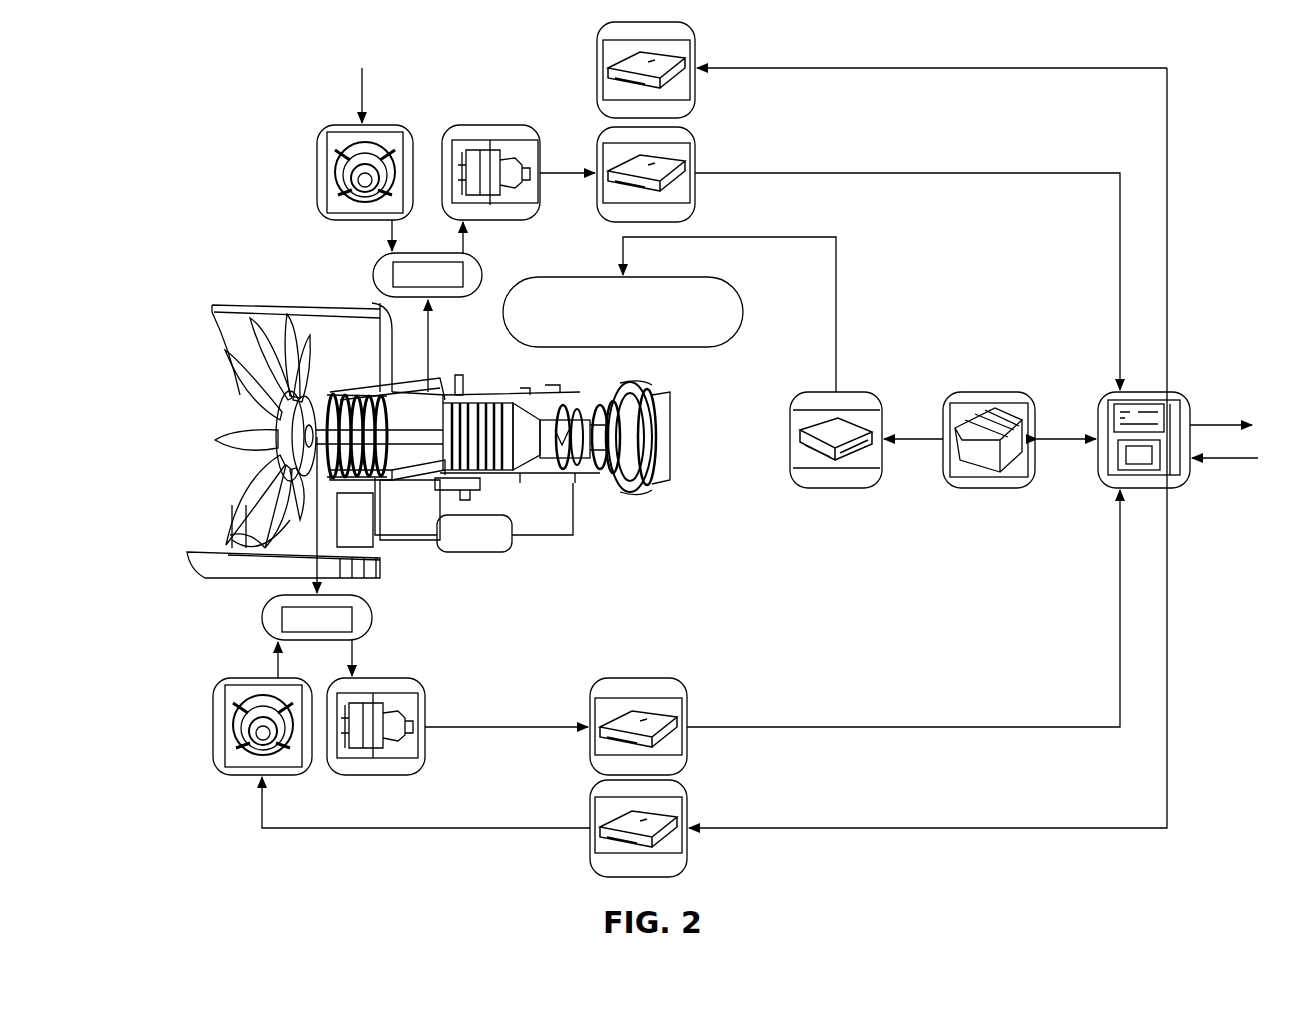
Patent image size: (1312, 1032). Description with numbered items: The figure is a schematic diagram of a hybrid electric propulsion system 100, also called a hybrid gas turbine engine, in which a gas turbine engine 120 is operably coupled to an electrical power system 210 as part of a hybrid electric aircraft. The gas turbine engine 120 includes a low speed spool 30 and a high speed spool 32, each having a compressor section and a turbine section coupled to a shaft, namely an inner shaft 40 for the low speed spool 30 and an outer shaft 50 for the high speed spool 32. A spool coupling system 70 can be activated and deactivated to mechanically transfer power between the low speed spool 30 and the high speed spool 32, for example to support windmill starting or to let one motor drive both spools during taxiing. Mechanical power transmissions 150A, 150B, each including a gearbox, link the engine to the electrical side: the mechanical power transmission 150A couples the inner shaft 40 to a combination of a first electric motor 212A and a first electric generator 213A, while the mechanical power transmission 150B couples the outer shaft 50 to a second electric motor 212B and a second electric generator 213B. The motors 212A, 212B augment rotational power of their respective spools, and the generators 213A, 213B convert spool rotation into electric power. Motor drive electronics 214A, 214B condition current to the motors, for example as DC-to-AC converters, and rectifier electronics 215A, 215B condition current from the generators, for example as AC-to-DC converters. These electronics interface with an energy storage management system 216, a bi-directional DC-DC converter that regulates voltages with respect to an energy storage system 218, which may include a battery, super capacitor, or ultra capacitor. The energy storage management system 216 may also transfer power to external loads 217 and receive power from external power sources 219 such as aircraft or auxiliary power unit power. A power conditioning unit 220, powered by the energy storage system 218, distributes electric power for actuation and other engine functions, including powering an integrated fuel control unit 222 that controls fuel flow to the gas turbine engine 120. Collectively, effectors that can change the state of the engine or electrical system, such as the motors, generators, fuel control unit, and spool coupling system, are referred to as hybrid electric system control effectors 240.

The hybrid electric propulsion system 100 is at (132, 97).
The gas turbine engine 120 is at (173, 353).
The inner shaft 40 is at (237, 398).
The low speed spool 30 is at (380, 390).
The outer shaft 50 is at (466, 392).
The high speed spool 32 is at (542, 430).
The spool coupling system 70 is at (487, 554).
The mechanical power transmission 150A is at (260, 618).
The mechanical power transmission 150B is at (482, 276).
The electrical power system 210 is at (138, 615).
The first electric motor 212A is at (265, 676).
The second electric motor 212B is at (352, 122).
The first electric generator 213A is at (378, 678).
The second electric generator 213B is at (468, 122).
The motor drive electronics 214A is at (695, 803).
The motor drive electronics 214B is at (695, 45).
The rectifier electronics 215A is at (640, 678).
The rectifier electronics 215B is at (695, 158).
The energy storage management system 216 is at (1190, 415).
The external loads 217 is at (1228, 418).
The energy storage system 218 is at (988, 392).
The external power sources 219 is at (1228, 460).
The power conditioning unit 220 is at (843, 392).
The integrated fuel control unit 222 is at (703, 277).
The hybrid electric system control effectors 240 is at (1023, 277).